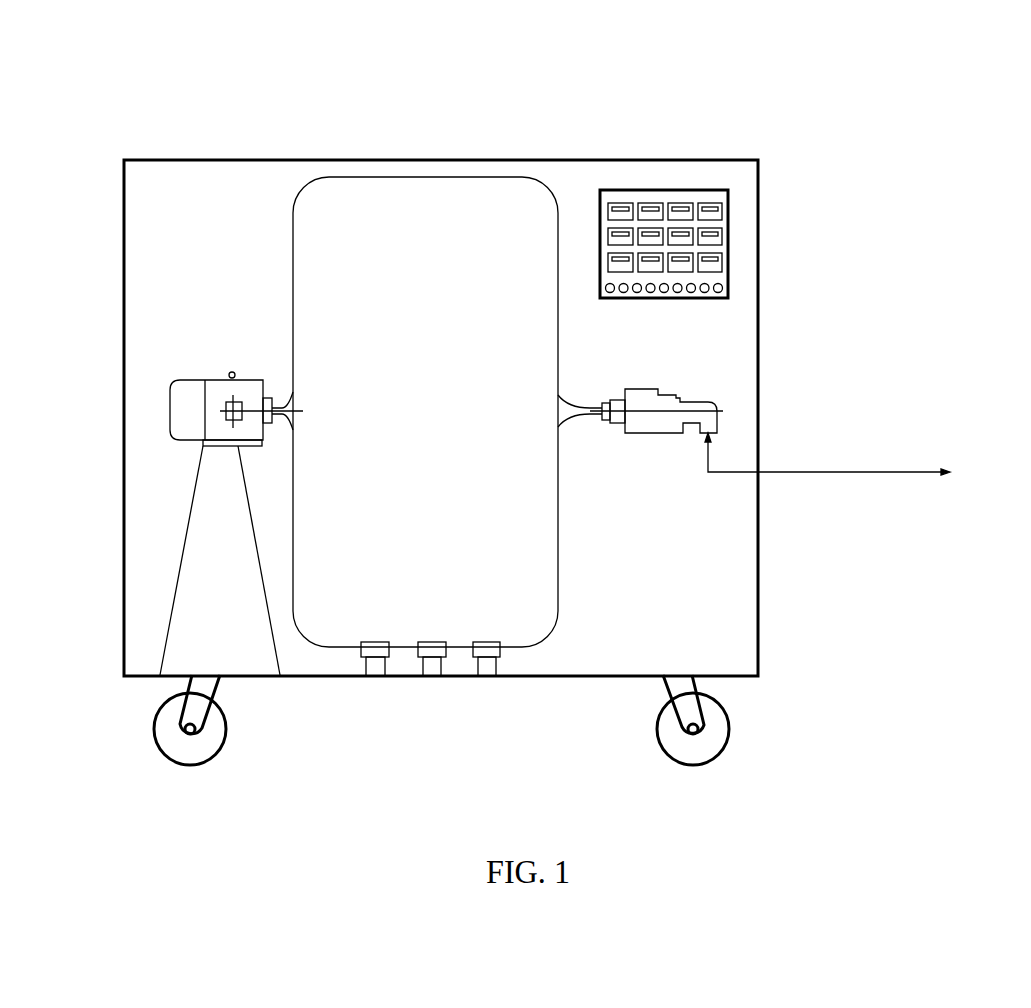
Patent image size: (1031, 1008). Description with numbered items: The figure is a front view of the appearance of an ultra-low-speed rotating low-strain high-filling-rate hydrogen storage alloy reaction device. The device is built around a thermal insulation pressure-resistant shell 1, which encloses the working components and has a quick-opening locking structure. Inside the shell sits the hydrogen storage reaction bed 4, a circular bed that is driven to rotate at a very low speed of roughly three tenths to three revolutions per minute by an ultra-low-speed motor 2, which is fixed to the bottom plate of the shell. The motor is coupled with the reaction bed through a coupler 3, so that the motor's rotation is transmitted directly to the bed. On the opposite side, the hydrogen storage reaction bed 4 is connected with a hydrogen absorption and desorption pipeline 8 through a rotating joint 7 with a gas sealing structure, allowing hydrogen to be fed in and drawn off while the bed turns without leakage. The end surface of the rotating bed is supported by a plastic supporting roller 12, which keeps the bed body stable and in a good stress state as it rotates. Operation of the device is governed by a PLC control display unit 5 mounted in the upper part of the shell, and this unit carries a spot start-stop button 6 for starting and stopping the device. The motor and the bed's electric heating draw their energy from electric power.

The thermal insulation pressure-resistant shell 1 is at (441, 355).
The ultra-low-speed motor 2 is at (273, 355).
The coupler 3 is at (378, 232).
The hydrogen storage reaction bed 4 is at (426, 341).
The PLC control display unit 5 is at (658, 166).
The spot start-stop button 6 is at (670, 164).
The rotating joint with gas sealing structure 7 is at (686, 234).
The hydrogen absorption and desorption pipeline 8 is at (860, 255).
The plastic supporting roller 12 is at (604, 593).